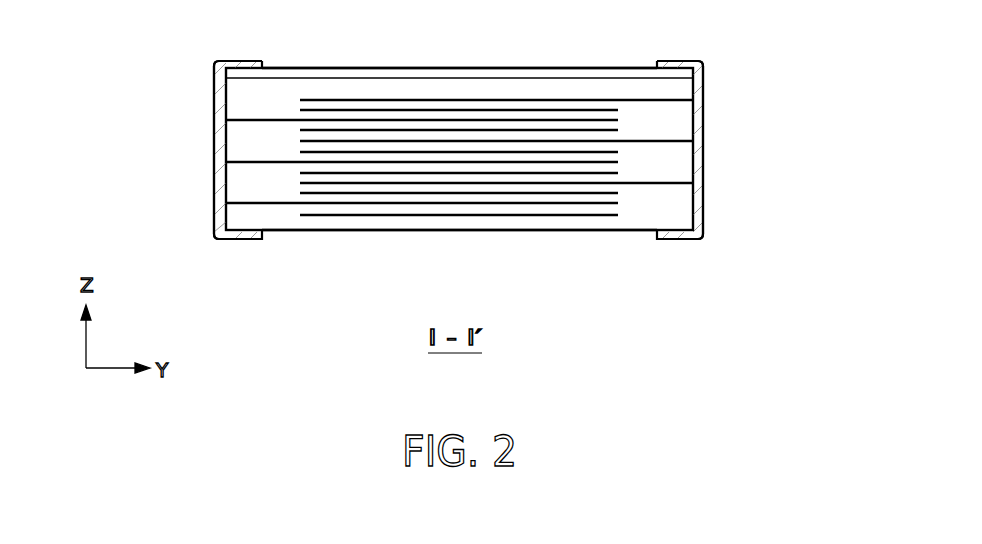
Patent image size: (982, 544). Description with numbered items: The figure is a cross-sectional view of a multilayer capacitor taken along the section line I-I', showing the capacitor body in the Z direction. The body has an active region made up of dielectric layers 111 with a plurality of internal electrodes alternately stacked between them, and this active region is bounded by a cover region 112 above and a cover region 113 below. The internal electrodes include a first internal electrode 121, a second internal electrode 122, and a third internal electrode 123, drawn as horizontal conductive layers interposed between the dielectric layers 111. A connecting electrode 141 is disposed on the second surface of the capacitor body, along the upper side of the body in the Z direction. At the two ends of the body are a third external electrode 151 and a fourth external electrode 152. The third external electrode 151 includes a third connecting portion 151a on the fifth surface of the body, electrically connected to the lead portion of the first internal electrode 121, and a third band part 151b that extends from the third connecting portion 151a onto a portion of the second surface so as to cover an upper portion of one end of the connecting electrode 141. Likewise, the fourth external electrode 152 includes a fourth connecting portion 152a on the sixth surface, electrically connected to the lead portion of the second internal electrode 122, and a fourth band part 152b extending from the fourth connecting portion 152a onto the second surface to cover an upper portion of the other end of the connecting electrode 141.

The dielectric layer 111 is at (675, 163).
The cover region 112 is at (525, 88).
The cover region 113 is at (556, 231).
The first internal electrode 121 is at (348, 118).
The second internal electrode 122 is at (587, 98).
The third internal electrode 123 is at (467, 106).
The connecting electrode 141 is at (405, 78).
The third external electrode 151 is at (104, 55).
The third connecting portion 151a is at (214, 136).
The third band part 151b is at (244, 61).
The fourth external electrode 152 is at (815, 55).
The fourth connecting portion 152a is at (703, 136).
The fourth band part 152b is at (658, 62).